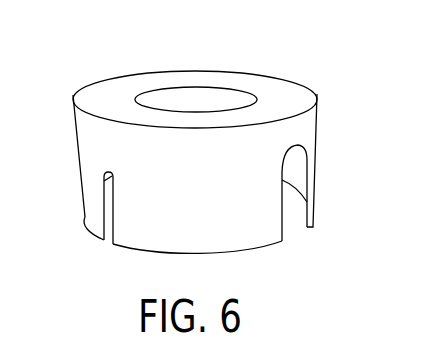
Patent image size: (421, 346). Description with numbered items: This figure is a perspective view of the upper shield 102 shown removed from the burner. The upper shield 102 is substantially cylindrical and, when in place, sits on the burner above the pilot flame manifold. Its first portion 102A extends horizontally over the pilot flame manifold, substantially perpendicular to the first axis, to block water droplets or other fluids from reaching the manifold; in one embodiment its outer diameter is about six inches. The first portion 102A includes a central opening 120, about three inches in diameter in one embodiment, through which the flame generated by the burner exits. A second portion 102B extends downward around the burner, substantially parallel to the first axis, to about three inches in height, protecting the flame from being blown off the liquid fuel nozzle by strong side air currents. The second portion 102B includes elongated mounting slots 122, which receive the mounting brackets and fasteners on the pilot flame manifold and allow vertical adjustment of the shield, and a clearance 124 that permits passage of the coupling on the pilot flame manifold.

The upper shield 102 is at (204, 151).
The first portion 102A is at (255, 85).
The second portion 102B is at (210, 204).
The central opening 120 is at (175, 93).
The mounting slots 122 is at (108, 216).
The clearance 124 is at (295, 228).